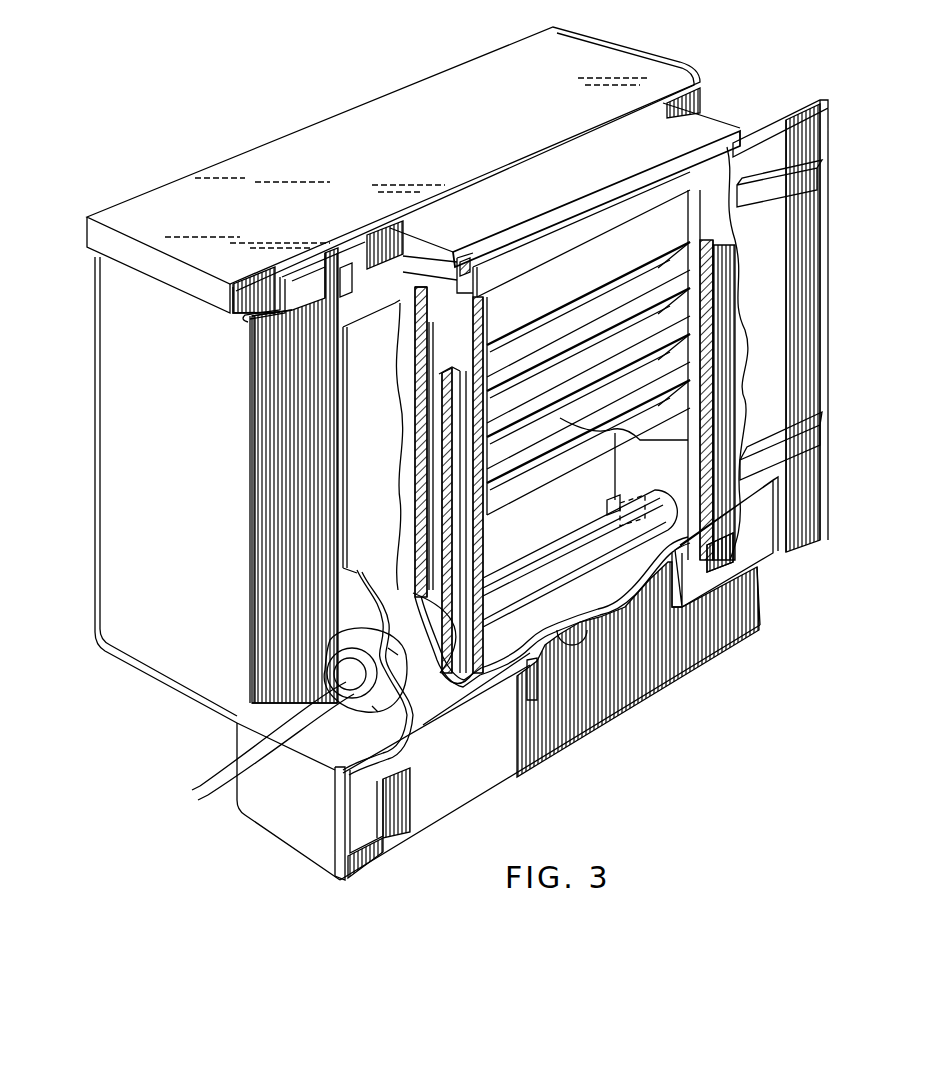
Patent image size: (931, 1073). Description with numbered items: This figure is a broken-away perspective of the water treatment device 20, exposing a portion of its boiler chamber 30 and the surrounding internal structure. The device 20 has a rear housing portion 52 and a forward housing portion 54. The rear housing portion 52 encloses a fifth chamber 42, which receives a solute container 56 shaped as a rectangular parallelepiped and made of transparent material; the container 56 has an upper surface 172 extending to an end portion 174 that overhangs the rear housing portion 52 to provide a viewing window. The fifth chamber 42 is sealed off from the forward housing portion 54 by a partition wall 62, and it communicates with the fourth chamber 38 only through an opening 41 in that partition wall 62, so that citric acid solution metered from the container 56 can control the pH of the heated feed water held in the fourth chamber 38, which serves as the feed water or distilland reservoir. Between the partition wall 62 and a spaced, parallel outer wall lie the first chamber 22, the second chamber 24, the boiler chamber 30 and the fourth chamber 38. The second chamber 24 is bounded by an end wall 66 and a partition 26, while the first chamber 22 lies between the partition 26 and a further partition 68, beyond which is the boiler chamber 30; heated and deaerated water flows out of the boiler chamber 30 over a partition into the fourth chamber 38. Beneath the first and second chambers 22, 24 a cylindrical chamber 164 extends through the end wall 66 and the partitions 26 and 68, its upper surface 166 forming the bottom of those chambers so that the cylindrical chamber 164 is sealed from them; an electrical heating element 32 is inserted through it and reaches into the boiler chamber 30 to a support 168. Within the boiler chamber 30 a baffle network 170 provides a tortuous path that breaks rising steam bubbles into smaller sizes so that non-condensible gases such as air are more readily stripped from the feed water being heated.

The water treatment device 20 is at (677, 692).
The first chamber 22 is at (463, 527).
The second chamber 24 is at (433, 504).
The partition 26 is at (437, 373).
The boiler chamber 30 is at (580, 526).
The electrical heating element 32 is at (520, 585).
The fourth chamber 38 is at (735, 342).
The opening 41 is at (650, 492).
The fifth chamber 42 is at (247, 316).
The rear housing portion 52 is at (158, 603).
The forward housing portion 54 is at (303, 446).
The solute container 56 is at (393, 186).
The partition wall 62 is at (306, 276).
The end wall 66 is at (352, 272).
The partition 68 is at (473, 295).
The cylindrical chamber 164 is at (380, 716).
The upper surface 166 is at (413, 568).
The support 168 is at (683, 572).
The baffle network 170 is at (652, 158).
The upper surface 172 is at (500, 88).
The end portion 174 is at (180, 290).